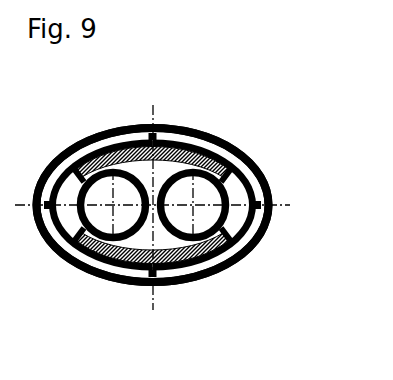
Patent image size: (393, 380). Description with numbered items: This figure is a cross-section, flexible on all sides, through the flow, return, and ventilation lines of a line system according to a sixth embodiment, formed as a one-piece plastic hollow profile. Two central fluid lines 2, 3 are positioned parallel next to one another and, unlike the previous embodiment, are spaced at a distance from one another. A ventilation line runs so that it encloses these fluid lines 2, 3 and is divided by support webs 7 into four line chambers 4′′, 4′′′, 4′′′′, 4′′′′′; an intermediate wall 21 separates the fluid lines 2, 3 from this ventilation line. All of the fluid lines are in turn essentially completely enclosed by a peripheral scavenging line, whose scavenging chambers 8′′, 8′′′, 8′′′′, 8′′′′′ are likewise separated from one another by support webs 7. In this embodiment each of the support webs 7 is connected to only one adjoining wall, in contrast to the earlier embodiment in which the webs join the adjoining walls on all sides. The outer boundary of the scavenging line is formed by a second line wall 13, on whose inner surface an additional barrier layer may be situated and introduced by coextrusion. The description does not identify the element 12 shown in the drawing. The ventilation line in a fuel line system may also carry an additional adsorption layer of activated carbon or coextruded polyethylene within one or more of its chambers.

The fluid line 2 is at (85, 253).
The fluid line 3 is at (212, 268).
The support web 7 is at (38, 180).
The scavenging chamber 8′′ is at (80, 153).
The scavenging chamber 8′′′ is at (62, 248).
The scavenging chamber 8′′′′ is at (228, 265).
The scavenging chamber 8′′′′′ is at (222, 151).
The line chamber 4′′ is at (93, 158).
The line chamber 4′′′ is at (73, 218).
The line chamber 4′′′′ is at (170, 278).
The line chamber 4′′′′′ is at (233, 193).
The first rotor 12 is at (139, 177).
The intermediate wall 21 is at (151, 178).
The second line wall 13 is at (205, 136).